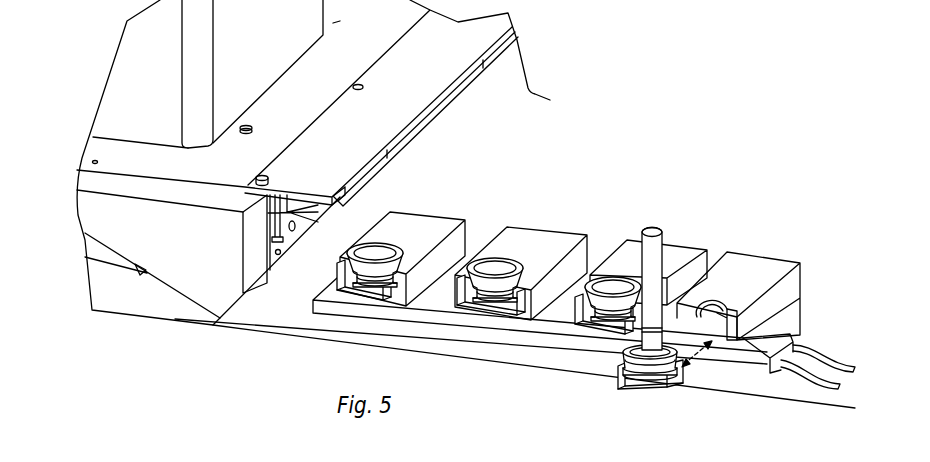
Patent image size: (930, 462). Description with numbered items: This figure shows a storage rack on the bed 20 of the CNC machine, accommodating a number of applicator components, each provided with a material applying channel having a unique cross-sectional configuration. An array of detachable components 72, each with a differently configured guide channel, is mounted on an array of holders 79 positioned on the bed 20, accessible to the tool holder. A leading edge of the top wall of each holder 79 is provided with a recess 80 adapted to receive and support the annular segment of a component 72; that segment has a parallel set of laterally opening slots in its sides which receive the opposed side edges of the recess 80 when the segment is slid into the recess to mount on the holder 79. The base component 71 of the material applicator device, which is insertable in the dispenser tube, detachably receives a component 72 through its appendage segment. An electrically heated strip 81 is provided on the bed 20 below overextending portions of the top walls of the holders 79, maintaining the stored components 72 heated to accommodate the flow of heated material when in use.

The bed 20 is at (290, 323).
The base component 71 is at (667, 266).
The detachable component 72 is at (350, 252).
The holder 79 is at (417, 220).
The recess 80 is at (785, 300).
The electrically heated strip 81 is at (762, 366).